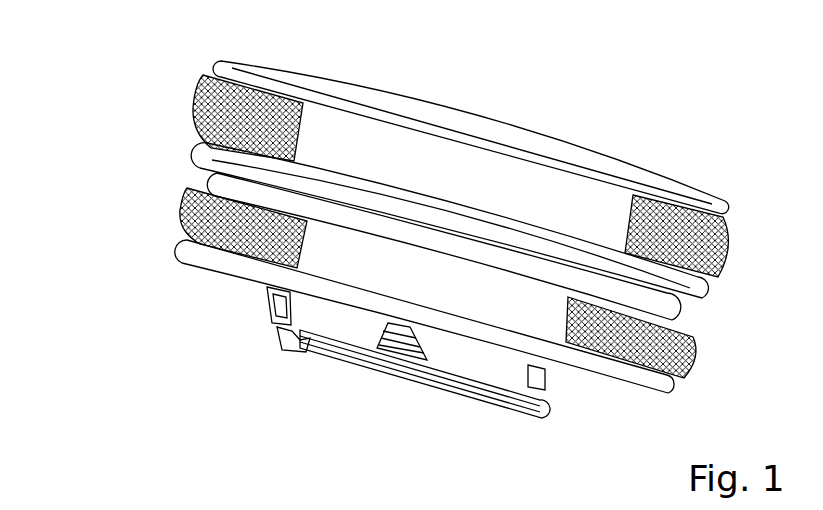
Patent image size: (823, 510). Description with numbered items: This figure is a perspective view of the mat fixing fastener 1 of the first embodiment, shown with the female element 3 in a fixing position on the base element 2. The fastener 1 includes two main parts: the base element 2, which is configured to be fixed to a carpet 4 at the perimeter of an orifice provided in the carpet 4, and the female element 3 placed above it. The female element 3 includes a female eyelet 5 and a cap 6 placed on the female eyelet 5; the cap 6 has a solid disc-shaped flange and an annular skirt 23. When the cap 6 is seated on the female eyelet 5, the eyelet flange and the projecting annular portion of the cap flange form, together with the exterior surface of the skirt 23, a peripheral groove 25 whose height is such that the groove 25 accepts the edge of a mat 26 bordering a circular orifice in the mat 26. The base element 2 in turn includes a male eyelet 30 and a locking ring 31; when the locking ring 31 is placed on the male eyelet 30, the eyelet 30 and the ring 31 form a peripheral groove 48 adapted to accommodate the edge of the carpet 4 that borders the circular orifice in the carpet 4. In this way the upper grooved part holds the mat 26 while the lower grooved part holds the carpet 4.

The mat fixing fastener 1 is at (112, 128).
The base element 2 is at (153, 243).
The female element 3 is at (176, 56).
The carpet 4 is at (687, 357).
The female eyelet 5 is at (718, 278).
The cap 6 is at (725, 208).
The annular skirt 23 is at (542, 178).
The peripheral groove 25 is at (218, 110).
The mat 26 is at (728, 218).
The male eyelet 30 is at (673, 313).
The locking ring 31 is at (667, 384).
The peripheral groove 48 is at (208, 268).